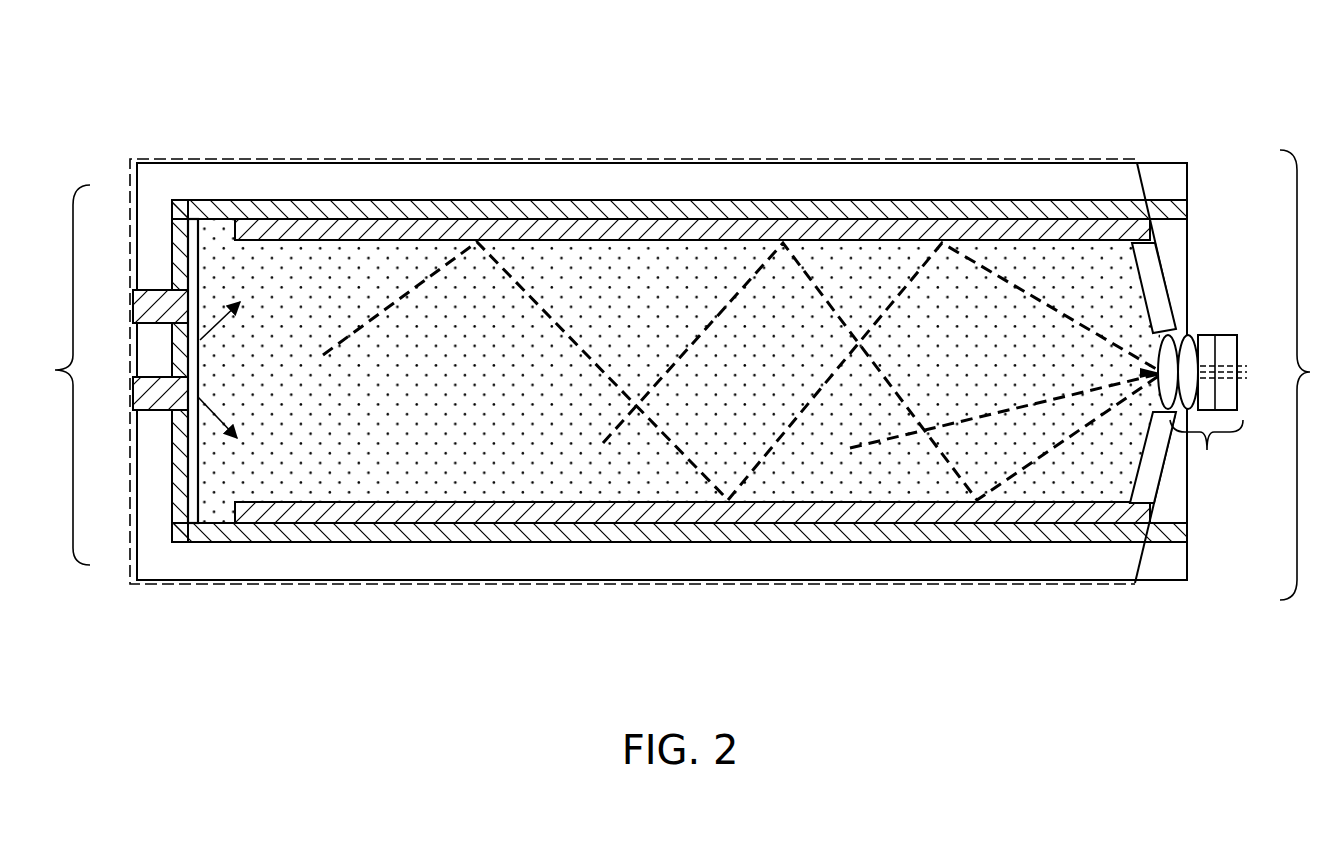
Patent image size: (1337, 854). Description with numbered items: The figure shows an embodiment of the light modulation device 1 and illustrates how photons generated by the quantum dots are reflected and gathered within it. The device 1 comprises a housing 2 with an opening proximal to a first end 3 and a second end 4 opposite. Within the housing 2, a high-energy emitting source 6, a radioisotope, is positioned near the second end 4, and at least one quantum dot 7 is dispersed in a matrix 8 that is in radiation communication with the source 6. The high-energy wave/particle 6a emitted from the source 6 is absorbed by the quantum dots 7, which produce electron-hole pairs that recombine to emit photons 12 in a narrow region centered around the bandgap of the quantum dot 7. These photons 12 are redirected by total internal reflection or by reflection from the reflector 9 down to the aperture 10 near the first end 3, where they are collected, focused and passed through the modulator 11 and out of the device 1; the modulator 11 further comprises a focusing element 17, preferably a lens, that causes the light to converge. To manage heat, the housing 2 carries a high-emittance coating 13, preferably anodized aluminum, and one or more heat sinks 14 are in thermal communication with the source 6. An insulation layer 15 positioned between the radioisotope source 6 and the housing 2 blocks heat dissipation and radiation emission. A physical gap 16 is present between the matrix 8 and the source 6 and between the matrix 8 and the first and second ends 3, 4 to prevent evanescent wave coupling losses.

The light modulation device 1 is at (686, 120).
The housing 2 is at (213, 583).
The first end 3 is at (1306, 375).
The second end 4 is at (59, 375).
The high-energy emitting source 6 is at (193, 448).
The high-energy wave/particle 6a is at (224, 312).
The quantum dot 7 is at (568, 483).
The matrix 8 is at (679, 423).
The reflector 9 is at (1155, 270).
The aperture 10 is at (1174, 342).
The modulator 11 is at (1206, 457).
The photons 12 is at (585, 345).
The high-emittance coating 13 is at (130, 280).
The heat sink 14 is at (136, 304).
The insulation layer 15 is at (353, 210).
The physical gap 16 is at (206, 218).
The focusing element 17 is at (1200, 345).